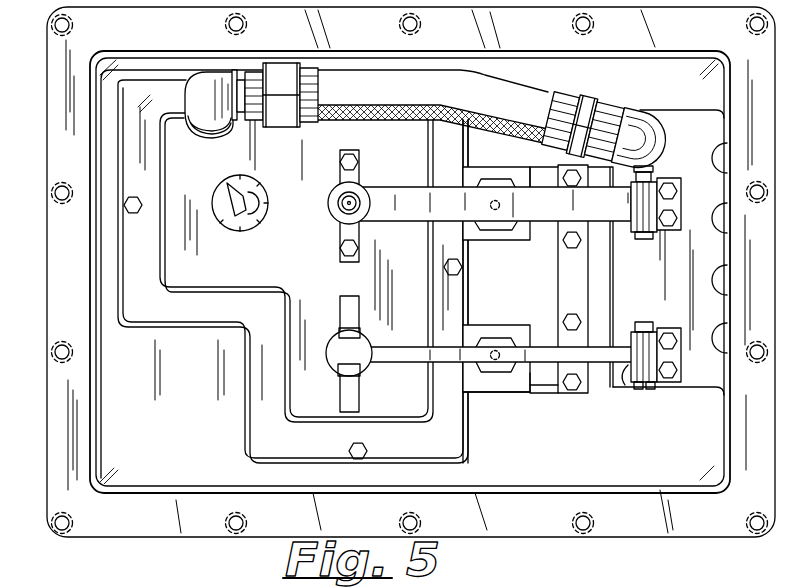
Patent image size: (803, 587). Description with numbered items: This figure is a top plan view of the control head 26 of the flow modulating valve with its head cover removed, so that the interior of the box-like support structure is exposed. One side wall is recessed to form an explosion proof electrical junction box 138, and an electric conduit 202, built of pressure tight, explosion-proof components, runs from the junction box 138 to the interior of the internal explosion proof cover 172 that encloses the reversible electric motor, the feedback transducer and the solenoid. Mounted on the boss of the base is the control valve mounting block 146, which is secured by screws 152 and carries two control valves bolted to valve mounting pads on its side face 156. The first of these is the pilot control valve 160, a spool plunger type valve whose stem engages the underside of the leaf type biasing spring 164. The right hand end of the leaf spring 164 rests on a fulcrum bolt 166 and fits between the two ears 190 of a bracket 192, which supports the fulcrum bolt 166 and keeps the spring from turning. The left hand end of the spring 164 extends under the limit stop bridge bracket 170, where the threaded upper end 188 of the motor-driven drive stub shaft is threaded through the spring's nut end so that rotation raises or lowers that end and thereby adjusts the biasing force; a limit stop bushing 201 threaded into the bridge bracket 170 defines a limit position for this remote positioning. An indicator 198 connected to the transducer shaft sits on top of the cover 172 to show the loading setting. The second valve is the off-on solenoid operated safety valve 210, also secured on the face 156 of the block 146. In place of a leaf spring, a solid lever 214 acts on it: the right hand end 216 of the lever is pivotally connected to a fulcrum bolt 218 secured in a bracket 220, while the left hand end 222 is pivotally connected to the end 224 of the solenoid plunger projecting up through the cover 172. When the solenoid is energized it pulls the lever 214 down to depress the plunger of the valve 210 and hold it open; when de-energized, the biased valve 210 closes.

The control head 26 is at (58, 427).
The explosion proof electrical junction box 138 is at (687, 112).
The internal explosion proof cover 172 is at (216, 277).
The pilot control valve 160 is at (484, 240).
The side face of control valve mounting block 156 is at (517, 240).
The off-on solenoid operated safety valve 210 is at (495, 392).
The screws 152 is at (568, 312).
The control valve mounting block 146 is at (558, 388).
The solid lever 214 is at (546, 401).
The leaf type biasing spring 164 is at (394, 216).
The end of solenoid plunger 224 is at (376, 343).
The limit stop bridge bracket 170 is at (340, 230).
The threaded upper end of drive stub shaft 188 is at (343, 200).
The limit stop bushing 201 is at (340, 205).
The left hand end of solid lever 222 is at (322, 347).
The indicator 198 is at (253, 177).
The electric conduit 202 is at (398, 114).
The fulcrum bolt 166 is at (655, 178).
The ears of bracket 190 is at (631, 233).
The bracket 192 is at (681, 204).
The right hand end of solid lever 216 is at (668, 328).
The fulcrum bolt 218 is at (637, 391).
The bracket 220 is at (653, 391).